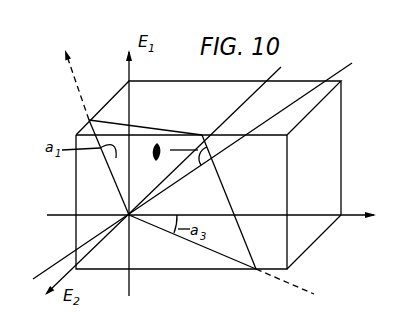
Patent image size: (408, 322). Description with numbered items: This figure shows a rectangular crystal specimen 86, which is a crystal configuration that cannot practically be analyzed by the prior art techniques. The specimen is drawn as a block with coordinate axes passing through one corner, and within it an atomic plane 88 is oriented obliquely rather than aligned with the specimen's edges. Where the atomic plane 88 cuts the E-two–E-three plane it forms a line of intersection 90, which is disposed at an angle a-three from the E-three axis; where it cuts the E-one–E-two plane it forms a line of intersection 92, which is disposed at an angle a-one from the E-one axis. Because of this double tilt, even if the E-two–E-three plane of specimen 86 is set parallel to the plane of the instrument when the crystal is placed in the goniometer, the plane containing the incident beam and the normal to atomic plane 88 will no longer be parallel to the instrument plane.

The rectangular crystal specimen 86 is at (196, 276).
The atomic plane 88 is at (222, 180).
The line of intersection 90 is at (192, 241).
The line of intersection 92 is at (108, 172).